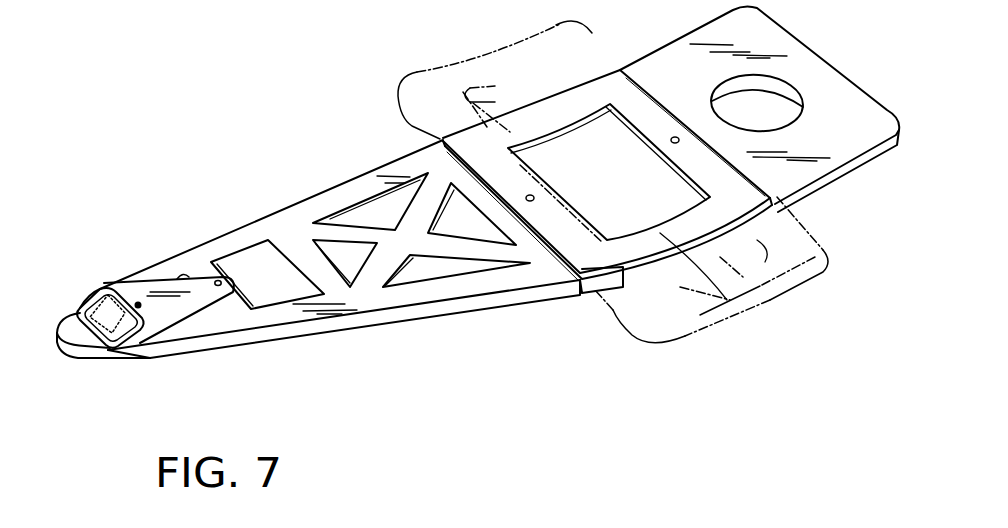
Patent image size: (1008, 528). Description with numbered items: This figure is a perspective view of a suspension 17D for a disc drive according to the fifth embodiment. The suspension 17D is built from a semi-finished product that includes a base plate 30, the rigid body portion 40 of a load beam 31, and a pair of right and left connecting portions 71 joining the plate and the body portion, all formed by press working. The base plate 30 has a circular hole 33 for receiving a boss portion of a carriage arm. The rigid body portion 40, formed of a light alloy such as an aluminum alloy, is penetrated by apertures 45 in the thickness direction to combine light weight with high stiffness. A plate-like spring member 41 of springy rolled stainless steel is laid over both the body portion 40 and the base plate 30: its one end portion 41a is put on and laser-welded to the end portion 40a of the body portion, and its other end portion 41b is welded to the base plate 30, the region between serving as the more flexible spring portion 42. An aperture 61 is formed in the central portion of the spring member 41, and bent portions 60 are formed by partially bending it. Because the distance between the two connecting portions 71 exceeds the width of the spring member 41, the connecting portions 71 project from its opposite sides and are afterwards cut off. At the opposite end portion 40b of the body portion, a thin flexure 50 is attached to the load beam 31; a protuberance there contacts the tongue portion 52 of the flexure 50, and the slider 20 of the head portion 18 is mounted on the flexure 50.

The suspension 17D is at (299, 94).
The head portion 18 is at (88, 350).
The slider 20 is at (102, 285).
The base plate 30 is at (833, 143).
The load beam 31 is at (453, 322).
The circular hole 33 is at (787, 100).
The rigid body portion 40 is at (325, 336).
The end portion of the rigid body portion 40a is at (563, 296).
The end portion of the body portion 40b is at (148, 345).
The spring member 41 is at (510, 132).
The one end portion of the spring member 41a is at (440, 138).
The other end portion of the spring member 41b is at (658, 110).
The spring portion 42 is at (640, 262).
The apertures 45 is at (378, 214).
The flexure 50 is at (163, 298).
The tongue portion 52 is at (100, 297).
The bent portions 60 is at (553, 127).
The aperture 61 is at (593, 163).
The connecting portions 71 is at (417, 72).